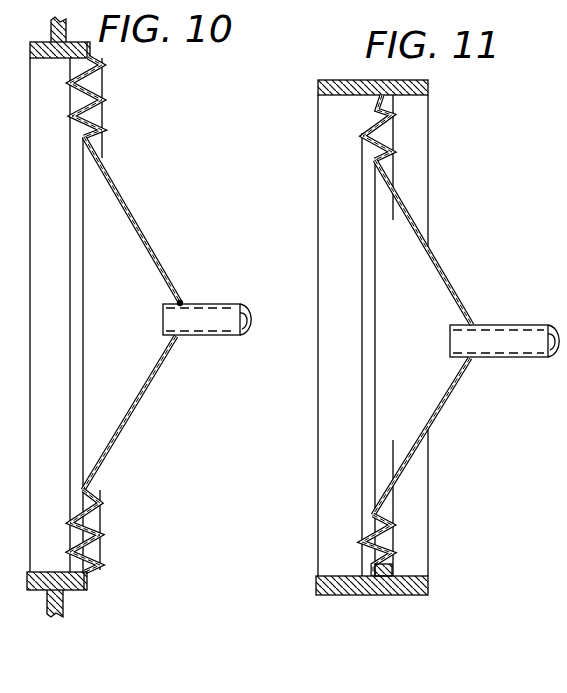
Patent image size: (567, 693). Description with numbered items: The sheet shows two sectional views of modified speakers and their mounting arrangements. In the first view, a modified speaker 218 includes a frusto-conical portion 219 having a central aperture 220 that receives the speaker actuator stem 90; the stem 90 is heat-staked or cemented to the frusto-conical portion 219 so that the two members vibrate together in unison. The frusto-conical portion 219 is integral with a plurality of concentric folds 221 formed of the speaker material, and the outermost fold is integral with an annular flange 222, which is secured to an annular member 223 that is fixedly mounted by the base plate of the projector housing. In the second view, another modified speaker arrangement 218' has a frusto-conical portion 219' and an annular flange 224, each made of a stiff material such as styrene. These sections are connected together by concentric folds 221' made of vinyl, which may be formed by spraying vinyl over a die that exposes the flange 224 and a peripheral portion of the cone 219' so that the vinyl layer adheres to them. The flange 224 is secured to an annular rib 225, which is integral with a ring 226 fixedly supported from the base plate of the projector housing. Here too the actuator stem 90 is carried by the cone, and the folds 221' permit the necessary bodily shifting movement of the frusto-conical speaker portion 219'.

In FIG. 10, the speaker actuator stem 90 is at (217, 305).
In FIG. 11, the speaker actuator stem 90 is at (513, 325).
In FIG. 10, the modified speaker 218 is at (146, 413).
In FIG. 10, the frusto-conical portion 219 is at (155, 266).
In FIG. 10, the central aperture 220 is at (182, 300).
In FIG. 10, the concentric folds 221 is at (123, 98).
In FIG. 10, the annular flange 222 is at (91, 54).
In FIG. 10, the annular member 223 is at (73, 592).
In FIG. 11, the concentric folds 221' is at (319, 127).
In FIG. 11, the frusto-conical portion 219' is at (454, 242).
In FIG. 11, the modified speaker arrangement 218' is at (450, 436).
In FIG. 11, the annular flange 224 is at (371, 570).
In FIG. 11, the annular rib 225 is at (395, 568).
In FIG. 11, the ring 226 is at (397, 597).